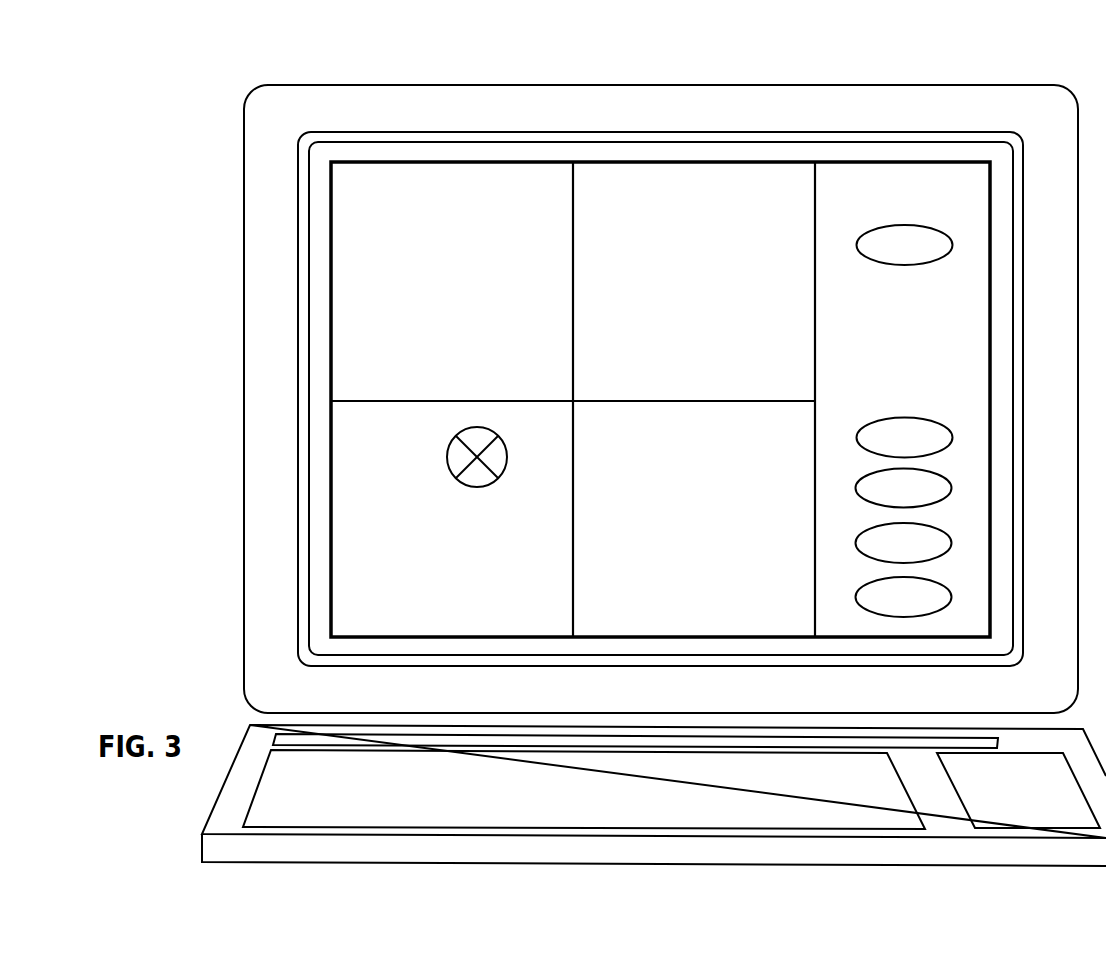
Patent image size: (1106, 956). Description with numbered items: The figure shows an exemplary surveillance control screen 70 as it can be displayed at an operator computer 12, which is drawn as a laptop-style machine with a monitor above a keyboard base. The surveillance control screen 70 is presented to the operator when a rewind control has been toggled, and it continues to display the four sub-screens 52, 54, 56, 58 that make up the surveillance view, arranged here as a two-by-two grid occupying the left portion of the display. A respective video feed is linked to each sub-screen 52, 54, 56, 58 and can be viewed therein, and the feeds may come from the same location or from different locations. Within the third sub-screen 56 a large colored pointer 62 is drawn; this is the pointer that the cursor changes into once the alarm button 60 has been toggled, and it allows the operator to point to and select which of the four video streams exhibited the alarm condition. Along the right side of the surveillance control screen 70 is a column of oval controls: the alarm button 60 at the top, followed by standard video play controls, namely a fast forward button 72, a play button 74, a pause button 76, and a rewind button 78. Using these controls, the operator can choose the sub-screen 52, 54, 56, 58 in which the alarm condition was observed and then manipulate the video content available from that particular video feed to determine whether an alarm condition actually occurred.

The operator computer 12 is at (258, 152).
The sub-screen 52 is at (390, 203).
The sub-screen 54 is at (619, 204).
The sub-screen 56 is at (390, 436).
The sub-screen 58 is at (619, 436).
The alarm button 60 is at (905, 266).
The pointer 62 is at (447, 460).
The surveillance control screen 70 is at (331, 363).
The fast forward button 72 is at (905, 417).
The play button 74 is at (951, 489).
The pause button 76 is at (856, 543).
The rewind button 78 is at (903, 617).